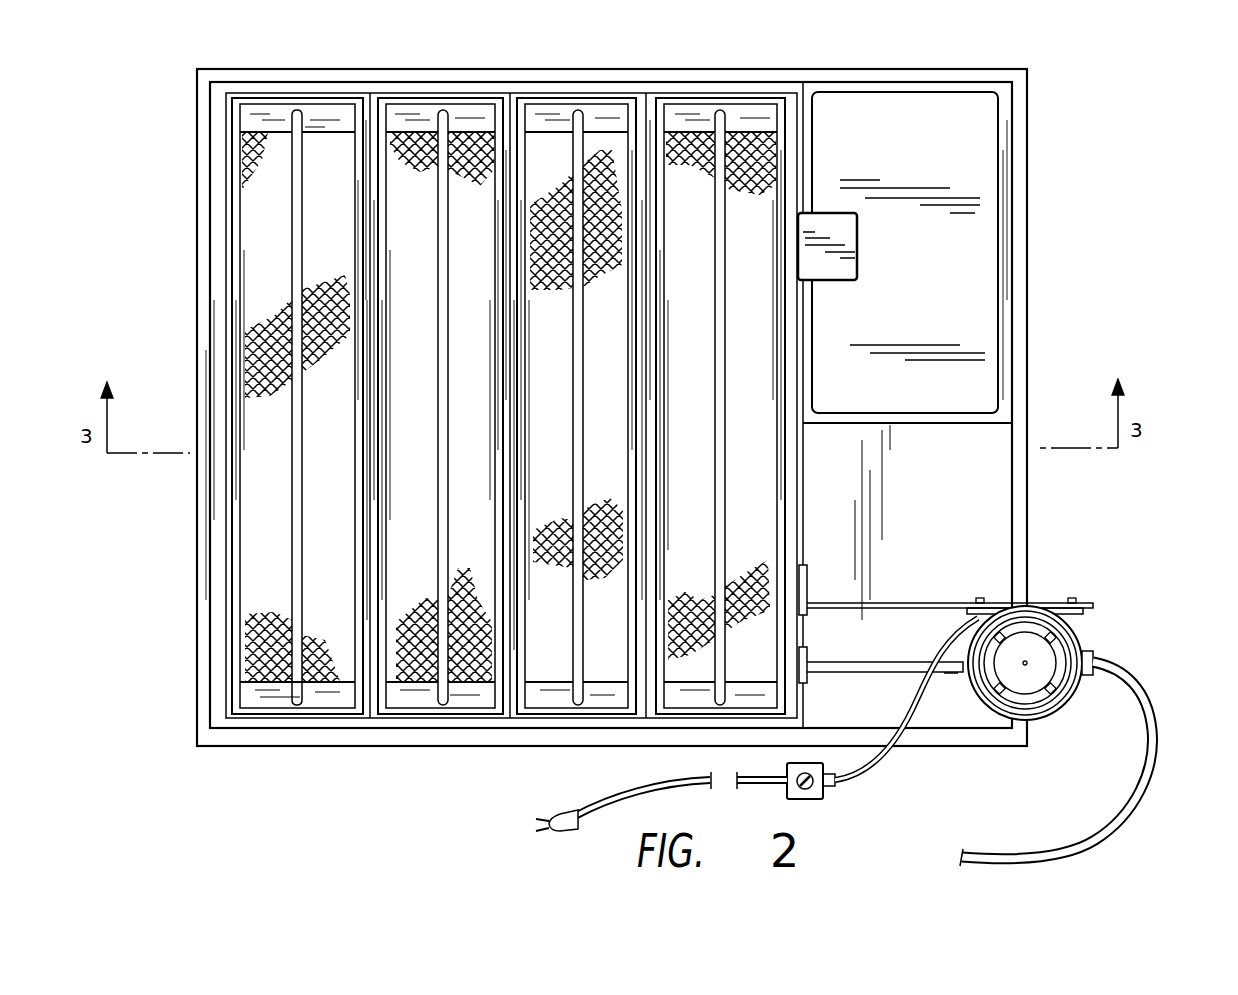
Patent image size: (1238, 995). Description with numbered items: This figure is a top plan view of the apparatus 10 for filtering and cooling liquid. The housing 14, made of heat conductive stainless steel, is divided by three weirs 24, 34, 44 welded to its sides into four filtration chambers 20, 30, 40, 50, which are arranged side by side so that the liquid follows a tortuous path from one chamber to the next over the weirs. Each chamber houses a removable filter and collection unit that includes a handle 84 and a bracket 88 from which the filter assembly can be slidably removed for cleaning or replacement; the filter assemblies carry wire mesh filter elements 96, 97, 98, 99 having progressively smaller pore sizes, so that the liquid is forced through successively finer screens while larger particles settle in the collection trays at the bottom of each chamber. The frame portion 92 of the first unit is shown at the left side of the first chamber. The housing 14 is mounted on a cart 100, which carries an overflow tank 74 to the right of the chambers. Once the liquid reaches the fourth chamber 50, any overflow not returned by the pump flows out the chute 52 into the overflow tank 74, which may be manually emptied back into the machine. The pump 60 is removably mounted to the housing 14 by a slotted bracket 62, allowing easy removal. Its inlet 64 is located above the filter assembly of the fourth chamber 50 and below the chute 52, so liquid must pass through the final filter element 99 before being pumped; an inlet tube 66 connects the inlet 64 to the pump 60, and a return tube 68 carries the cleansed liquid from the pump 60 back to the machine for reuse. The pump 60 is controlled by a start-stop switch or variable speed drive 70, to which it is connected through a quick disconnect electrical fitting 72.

The apparatus for filtering and cooling liquid 10 is at (782, 53).
The housing 14 is at (210, 262).
The first filtration chamber 20 is at (290, 96).
The first weir 24 is at (370, 100).
The second filtration chamber 30 is at (443, 98).
The second weir 34 is at (512, 103).
The third filtration chamber 40 is at (575, 98).
The third weir 44 is at (648, 103).
The fourth filtration chamber 50 is at (716, 95).
The chute 52 is at (828, 213).
The pump 60 is at (1082, 640).
The slotted bracket 62 is at (900, 600).
The inlet 64 is at (810, 652).
The inlet tube 66 is at (950, 676).
The return tube 68 is at (1158, 750).
The start-stop switch or variable speed drive 70 is at (815, 800).
The quick disconnect electrical fitting 72 is at (840, 790).
The overflow tank 74 is at (930, 277).
The handle 84 is at (292, 600).
The bracket 88 is at (245, 118).
The filter frame side 92 is at (240, 566).
The first filter element 96 is at (283, 427).
The second filter element 97 is at (432, 409).
The third filter element 98 is at (569, 409).
The fourth filter element 99 is at (705, 409).
The cart 100 is at (955, 490).